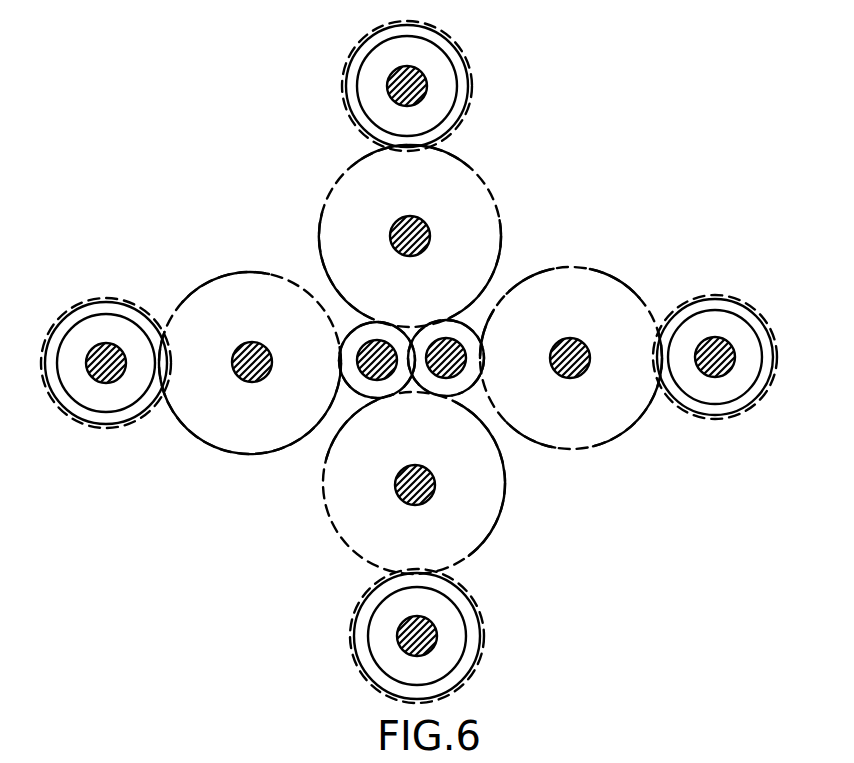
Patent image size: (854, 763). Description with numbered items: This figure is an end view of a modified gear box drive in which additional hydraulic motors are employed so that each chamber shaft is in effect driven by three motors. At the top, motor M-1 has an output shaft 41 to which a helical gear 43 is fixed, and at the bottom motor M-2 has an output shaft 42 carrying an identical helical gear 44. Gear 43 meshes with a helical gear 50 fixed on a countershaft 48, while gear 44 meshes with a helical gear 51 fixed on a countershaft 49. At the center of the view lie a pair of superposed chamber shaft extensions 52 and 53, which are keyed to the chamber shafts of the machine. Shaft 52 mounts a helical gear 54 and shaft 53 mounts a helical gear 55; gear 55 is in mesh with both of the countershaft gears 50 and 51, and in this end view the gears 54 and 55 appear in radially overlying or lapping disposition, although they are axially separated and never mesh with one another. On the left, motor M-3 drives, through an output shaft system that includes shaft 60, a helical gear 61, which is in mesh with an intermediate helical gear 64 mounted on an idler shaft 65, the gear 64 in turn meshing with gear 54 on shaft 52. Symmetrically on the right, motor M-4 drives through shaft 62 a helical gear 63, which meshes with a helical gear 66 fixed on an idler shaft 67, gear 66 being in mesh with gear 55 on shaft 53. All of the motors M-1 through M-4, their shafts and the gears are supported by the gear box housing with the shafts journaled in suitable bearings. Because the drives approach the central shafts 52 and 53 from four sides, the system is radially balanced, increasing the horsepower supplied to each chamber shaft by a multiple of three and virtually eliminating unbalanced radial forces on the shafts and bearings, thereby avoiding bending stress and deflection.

The hydraulic drive motor M-1 is at (380, 61).
The hydraulic drive motor M-2 is at (387, 612).
The hydraulic drive motor M-3 is at (80, 393).
The hydraulic drive motor M-4 is at (723, 397).
The output shaft 41 is at (387, 95).
The output shaft 42 is at (394, 633).
The helical gear 43 is at (468, 63).
The helical gear 44 is at (481, 633).
The countershaft 48 is at (393, 228).
The countershaft 49 is at (420, 480).
The helical gear 50 is at (490, 193).
The helical gear 51 is at (498, 523).
The chamber shaft extension 52 is at (362, 333).
The chamber shaft extension 53 is at (460, 338).
The helical gear 54 is at (325, 436).
The helical gear 55 is at (495, 431).
The output shaft 60 is at (110, 383).
The helical gear 61 is at (120, 298).
The output shaft 62 is at (727, 338).
The helical gear 63 is at (700, 293).
The intermediate helical gear 64 is at (198, 288).
The idler shaft 65 is at (244, 344).
The helical gear 66 is at (590, 457).
The idler shaft 67 is at (573, 336).